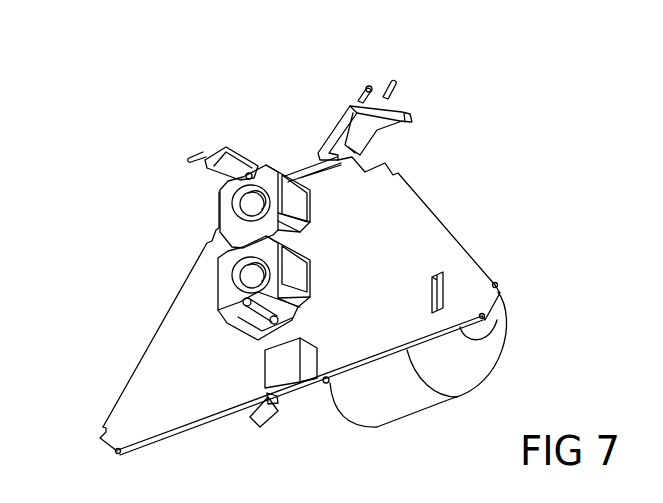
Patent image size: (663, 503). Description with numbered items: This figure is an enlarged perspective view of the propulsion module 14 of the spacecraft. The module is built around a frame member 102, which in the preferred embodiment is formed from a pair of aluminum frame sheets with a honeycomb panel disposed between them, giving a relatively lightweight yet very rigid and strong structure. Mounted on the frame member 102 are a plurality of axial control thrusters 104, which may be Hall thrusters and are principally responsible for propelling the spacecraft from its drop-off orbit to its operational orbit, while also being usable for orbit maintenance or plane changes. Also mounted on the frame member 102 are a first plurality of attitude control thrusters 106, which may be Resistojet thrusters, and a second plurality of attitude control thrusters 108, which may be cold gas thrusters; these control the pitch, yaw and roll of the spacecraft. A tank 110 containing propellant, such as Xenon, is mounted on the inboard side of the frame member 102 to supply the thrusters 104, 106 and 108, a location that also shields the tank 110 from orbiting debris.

The propulsion module 14 is at (72, 210).
The frame member 102 is at (173, 333).
The axial control thrusters 104 is at (297, 287).
The first plurality of attitude control thrusters 106 is at (362, 90).
The second plurality of attitude control thrusters 108 is at (384, 91).
The tank 110 is at (482, 366).